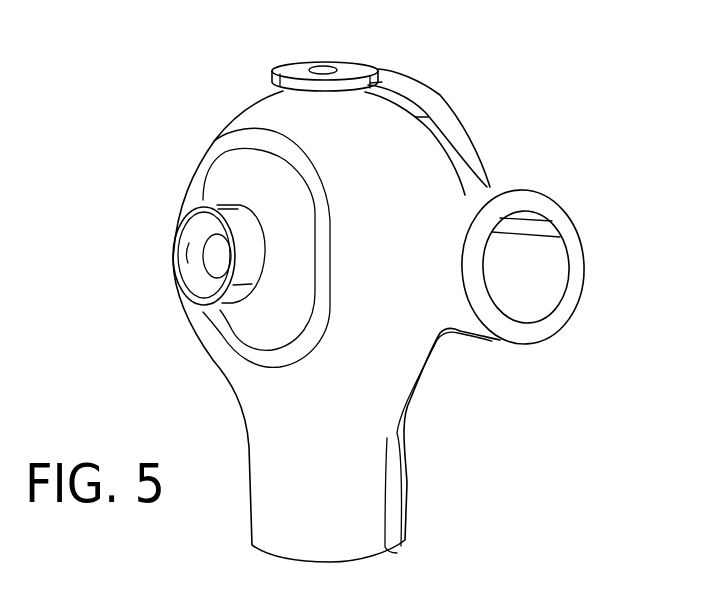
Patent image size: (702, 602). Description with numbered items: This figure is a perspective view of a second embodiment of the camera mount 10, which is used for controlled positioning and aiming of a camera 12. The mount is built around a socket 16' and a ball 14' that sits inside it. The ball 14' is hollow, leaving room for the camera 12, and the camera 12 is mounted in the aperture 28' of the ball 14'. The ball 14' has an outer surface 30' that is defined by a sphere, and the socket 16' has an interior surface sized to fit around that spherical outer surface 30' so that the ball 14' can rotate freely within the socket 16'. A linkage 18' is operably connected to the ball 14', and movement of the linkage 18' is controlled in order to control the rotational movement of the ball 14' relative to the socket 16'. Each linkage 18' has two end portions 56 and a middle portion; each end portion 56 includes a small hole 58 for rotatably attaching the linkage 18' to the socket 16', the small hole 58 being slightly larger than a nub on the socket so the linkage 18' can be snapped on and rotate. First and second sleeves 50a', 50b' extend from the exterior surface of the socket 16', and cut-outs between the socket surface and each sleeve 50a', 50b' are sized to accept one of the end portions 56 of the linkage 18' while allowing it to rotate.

The camera mount 10 is at (222, 55).
The camera 12 is at (187, 247).
The ball 14' is at (182, 288).
The socket 16' is at (335, 321).
The linkage 18' is at (441, 118).
The aperture 28' is at (226, 247).
The outer surface 30' is at (242, 286).
The first sleeve 50a' is at (531, 242).
The second sleeve 50b' is at (451, 442).
The end portion 56 is at (356, 69).
The small hole 58 is at (322, 67).